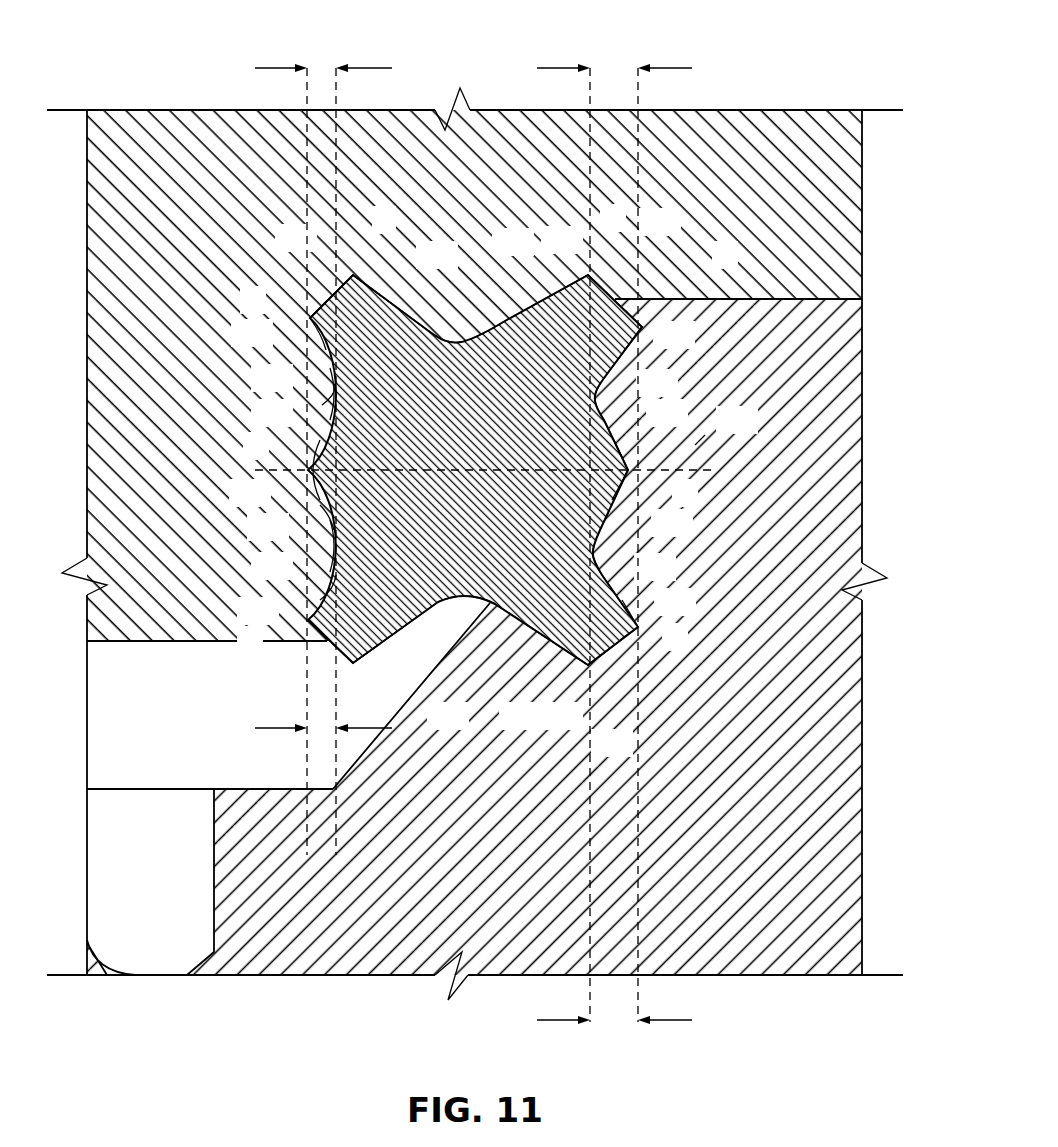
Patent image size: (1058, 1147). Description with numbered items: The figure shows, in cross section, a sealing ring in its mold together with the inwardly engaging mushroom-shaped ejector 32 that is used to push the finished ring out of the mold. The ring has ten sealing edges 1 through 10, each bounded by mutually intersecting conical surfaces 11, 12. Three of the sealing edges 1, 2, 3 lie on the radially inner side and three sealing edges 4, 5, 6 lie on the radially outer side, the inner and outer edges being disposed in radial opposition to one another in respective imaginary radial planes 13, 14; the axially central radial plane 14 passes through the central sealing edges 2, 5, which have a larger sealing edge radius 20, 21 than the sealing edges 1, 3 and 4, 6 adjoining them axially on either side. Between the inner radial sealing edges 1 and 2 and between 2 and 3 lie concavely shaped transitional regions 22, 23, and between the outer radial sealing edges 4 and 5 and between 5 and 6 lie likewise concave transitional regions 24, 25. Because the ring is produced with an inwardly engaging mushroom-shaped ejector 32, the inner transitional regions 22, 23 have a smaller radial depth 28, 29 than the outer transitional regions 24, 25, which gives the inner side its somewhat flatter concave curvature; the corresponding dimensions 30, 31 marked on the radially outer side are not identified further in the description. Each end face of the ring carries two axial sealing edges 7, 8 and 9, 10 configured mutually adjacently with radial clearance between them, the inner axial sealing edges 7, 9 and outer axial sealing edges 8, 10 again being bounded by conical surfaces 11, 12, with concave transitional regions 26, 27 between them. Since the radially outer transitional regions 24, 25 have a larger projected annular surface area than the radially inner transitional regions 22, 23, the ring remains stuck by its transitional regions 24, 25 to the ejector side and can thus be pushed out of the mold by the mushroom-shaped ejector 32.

The sealing edge 1 is at (307, 318).
The sealing edge 2 is at (302, 463).
The sealing edge 3 is at (327, 640).
The sealing edge 4 is at (648, 322).
The sealing edge 5 is at (645, 478).
The sealing edge 6 is at (642, 627).
The axial sealing edge 7 is at (355, 272).
The axial sealing edge 8 is at (591, 272).
The axial sealing edge 9 is at (354, 667).
The axial sealing edge 10 is at (590, 668).
The conical surface 11 is at (318, 290).
The conical surface 12 is at (413, 312).
The imaginary radial plane 13 is at (497, 544).
The imaginary radial plane 14 is at (712, 463).
The sealing edge radius 20 is at (300, 477).
The sealing edge radius 21 is at (700, 442).
The transitional region 22 is at (330, 388).
The transitional region 23 is at (328, 571).
The transitional region 24 is at (605, 393).
The transitional region 25 is at (610, 560).
The transitional region 26 is at (470, 345).
The transitional region 27 is at (478, 608).
The radial depth 28 is at (322, 67).
The radial depth 29 is at (322, 727).
The right gap width dimension 30 is at (620, 67).
The lower right gap width dimension 31 is at (615, 1022).
The mushroom-shaped ejector 32 is at (100, 654).